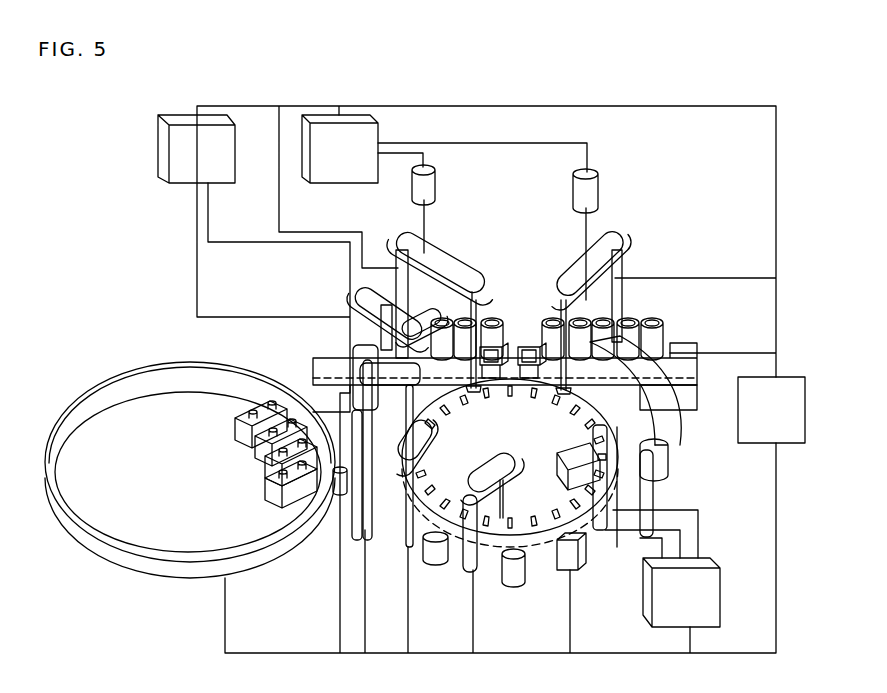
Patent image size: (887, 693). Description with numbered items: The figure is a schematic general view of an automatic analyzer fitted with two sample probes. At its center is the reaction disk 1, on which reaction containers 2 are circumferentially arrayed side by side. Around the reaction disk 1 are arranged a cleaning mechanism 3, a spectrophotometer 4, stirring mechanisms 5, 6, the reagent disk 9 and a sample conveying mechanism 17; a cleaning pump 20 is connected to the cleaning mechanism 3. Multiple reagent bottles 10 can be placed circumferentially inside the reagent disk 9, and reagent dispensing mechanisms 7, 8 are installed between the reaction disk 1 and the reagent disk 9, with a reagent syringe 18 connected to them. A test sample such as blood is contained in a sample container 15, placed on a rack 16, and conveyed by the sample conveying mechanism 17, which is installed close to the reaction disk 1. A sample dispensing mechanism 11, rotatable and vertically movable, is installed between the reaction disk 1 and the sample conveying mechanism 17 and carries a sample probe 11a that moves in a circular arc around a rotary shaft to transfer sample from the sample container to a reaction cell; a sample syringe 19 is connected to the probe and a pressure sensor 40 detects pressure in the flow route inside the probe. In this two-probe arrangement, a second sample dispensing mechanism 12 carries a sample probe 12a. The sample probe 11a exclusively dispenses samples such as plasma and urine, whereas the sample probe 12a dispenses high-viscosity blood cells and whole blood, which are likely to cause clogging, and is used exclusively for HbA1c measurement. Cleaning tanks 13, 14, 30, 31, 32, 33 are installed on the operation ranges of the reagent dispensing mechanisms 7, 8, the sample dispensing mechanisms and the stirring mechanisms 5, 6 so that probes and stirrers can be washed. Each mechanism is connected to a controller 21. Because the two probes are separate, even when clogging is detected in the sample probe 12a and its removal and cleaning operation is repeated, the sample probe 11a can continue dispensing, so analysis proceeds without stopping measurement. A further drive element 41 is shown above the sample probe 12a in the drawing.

The reaction disk 1 is at (587, 535).
The reaction container 2 is at (553, 522).
The cleaning mechanism 3 is at (650, 470).
The spectrophotometer 4 is at (572, 560).
The stirring mechanism 5 is at (403, 505).
The stirring mechanism 6 is at (470, 562).
The reagent dispensing mechanism 7 is at (366, 500).
The reagent dispensing mechanism 8 is at (360, 300).
The reagent disk 9 is at (178, 362).
The reagent bottle 10 is at (276, 498).
The sample dispensing mechanism 11 is at (398, 236).
The sample probe 11a is at (478, 280).
The sample dispensing mechanism 12 is at (623, 240).
The sample probe 12a is at (558, 300).
The cleaning tank 13 is at (484, 320).
The cleaning tank 14 is at (524, 345).
The sample container 15 is at (662, 326).
The rack 16 is at (660, 365).
The sample conveying mechanism 17 is at (665, 400).
The reagent syringe 18 is at (206, 150).
The sample syringe 19 is at (305, 165).
The cleaning pump 20 is at (698, 604).
The controller 21 is at (782, 435).
The cleaning tank 30 is at (520, 574).
The cleaning tank 31 is at (438, 560).
The cleaning tank 32 is at (336, 490).
The cleaning tank 33 is at (350, 478).
The pressure sensor 40 is at (437, 184).
The drive cylinder 41 is at (590, 196).